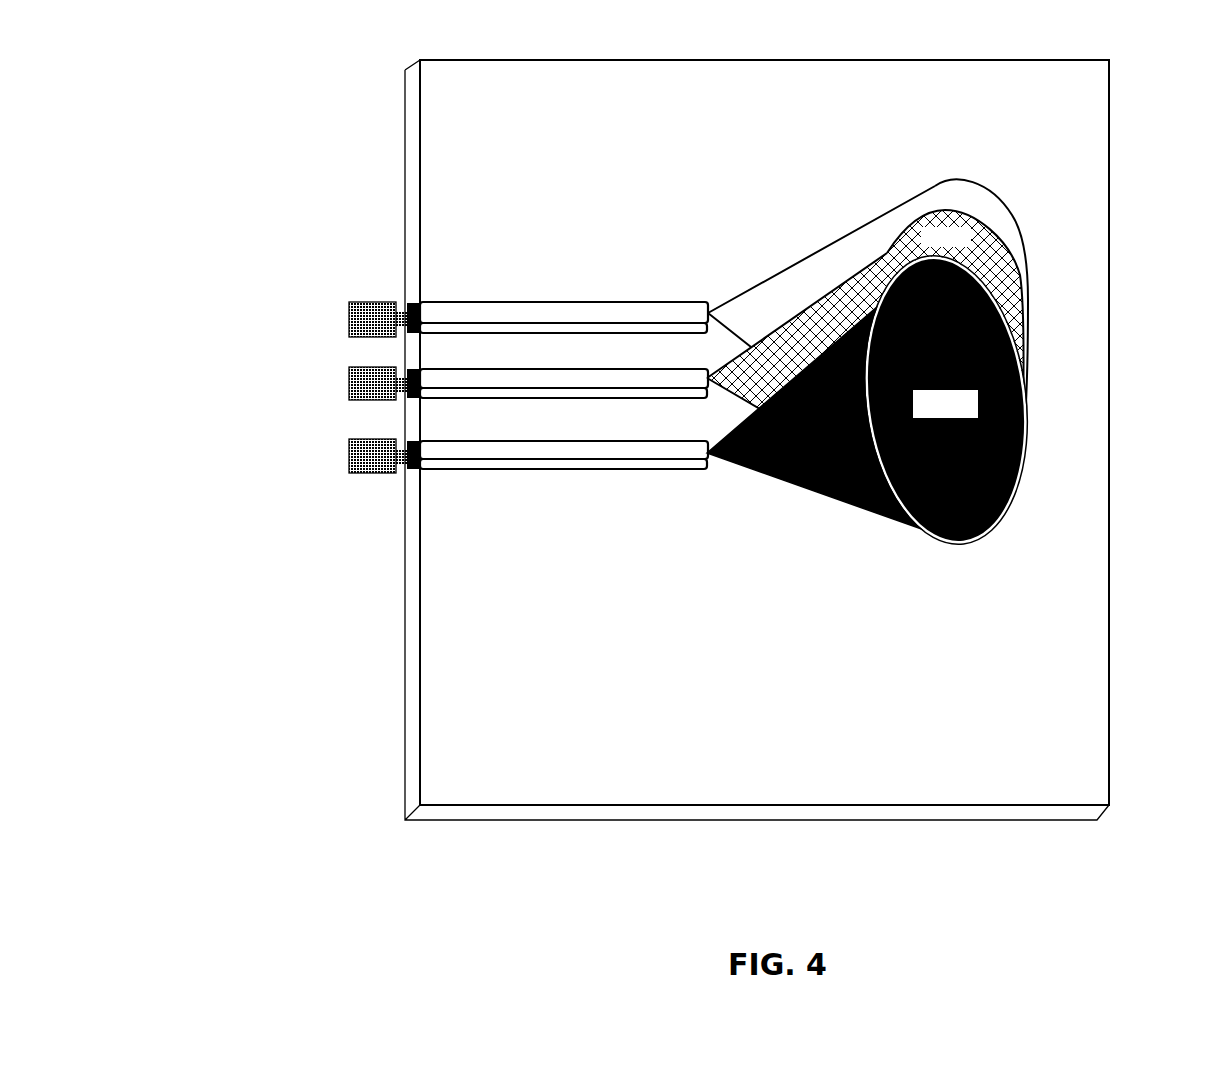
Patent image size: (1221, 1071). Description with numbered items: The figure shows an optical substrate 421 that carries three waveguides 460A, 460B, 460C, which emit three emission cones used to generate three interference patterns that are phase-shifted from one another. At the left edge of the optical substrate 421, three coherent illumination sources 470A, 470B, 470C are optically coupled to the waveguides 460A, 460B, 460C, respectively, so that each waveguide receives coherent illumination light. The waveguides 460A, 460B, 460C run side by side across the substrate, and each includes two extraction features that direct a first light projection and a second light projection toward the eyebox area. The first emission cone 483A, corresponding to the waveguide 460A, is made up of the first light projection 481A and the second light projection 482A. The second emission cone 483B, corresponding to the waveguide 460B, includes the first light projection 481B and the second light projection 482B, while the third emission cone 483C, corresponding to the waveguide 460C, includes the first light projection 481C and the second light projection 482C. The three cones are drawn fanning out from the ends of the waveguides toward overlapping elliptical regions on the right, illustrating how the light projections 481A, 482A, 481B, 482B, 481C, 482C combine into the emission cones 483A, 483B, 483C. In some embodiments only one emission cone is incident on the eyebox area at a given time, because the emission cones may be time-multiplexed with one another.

The optical substrate 421 is at (1043, 125).
The waveguide 460A is at (593, 288).
The waveguide 460B is at (580, 408).
The waveguide 460C is at (612, 483).
The coherent illumination source 470A is at (334, 322).
The coherent illumination source 470B is at (335, 387).
The coherent illumination source 470C is at (335, 459).
The first light projection 481A is at (963, 299).
The first light projection 481B is at (964, 365).
The first light projection 481C is at (904, 399).
The second light projection 482A is at (963, 299).
The second light projection 482B is at (964, 365).
The second light projection 482C is at (904, 399).
The first emission cone 483A is at (984, 203).
The second emission cone 483B is at (967, 246).
The third emission cone 483C is at (967, 415).